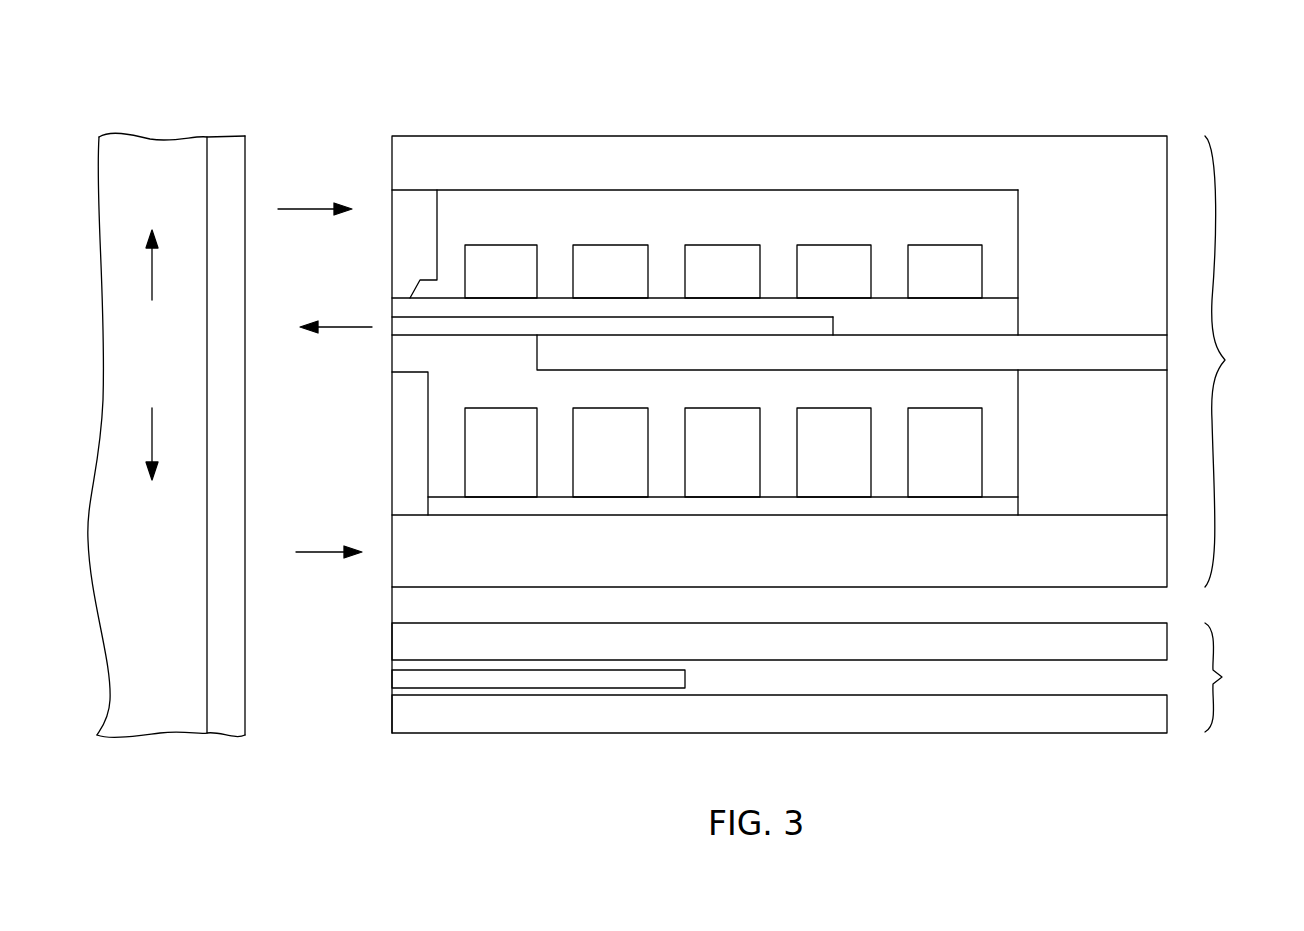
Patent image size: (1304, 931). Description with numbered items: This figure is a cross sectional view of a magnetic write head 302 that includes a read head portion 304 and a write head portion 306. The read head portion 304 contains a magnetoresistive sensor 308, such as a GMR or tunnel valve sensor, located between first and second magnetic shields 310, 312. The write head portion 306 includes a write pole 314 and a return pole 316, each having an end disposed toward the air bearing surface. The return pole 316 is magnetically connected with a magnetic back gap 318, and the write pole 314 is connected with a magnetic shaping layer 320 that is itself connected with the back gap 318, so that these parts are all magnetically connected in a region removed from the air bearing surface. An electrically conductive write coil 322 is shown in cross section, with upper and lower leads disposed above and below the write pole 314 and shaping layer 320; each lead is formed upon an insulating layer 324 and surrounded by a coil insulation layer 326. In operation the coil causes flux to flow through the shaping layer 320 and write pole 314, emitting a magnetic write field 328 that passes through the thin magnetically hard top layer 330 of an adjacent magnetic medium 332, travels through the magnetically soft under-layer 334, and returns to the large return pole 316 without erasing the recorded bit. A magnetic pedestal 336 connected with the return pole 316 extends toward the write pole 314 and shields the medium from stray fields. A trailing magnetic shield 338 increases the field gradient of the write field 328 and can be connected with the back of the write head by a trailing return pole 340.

The magnetic write head 302 is at (932, 90).
The read head portion 304 is at (1220, 636).
The write head portion 306 is at (1218, 157).
The magnetoresistive sensor 308 is at (668, 680).
The first magnetic shield 310 is at (789, 715).
The second magnetic shield 312 is at (791, 643).
The write pole 314 is at (408, 326).
The return pole 316 is at (796, 549).
The magnetic back gap 318 is at (1101, 433).
The magnetic shaping layer 320 is at (898, 352).
The write coil 322 is at (528, 272).
The insulating layer 324 is at (828, 330).
The coil insulation layer 326 is at (744, 217).
The magnetic write field 328 is at (150, 250).
The magnetically hard top layer 330 is at (233, 155).
The magnetic medium 332 is at (151, 120).
The magnetically soft under-layer 334 is at (174, 345).
The magnetic pedestal 336 is at (400, 415).
The trailing magnetic shield 338 is at (418, 217).
The trailing return pole 340 is at (746, 163).